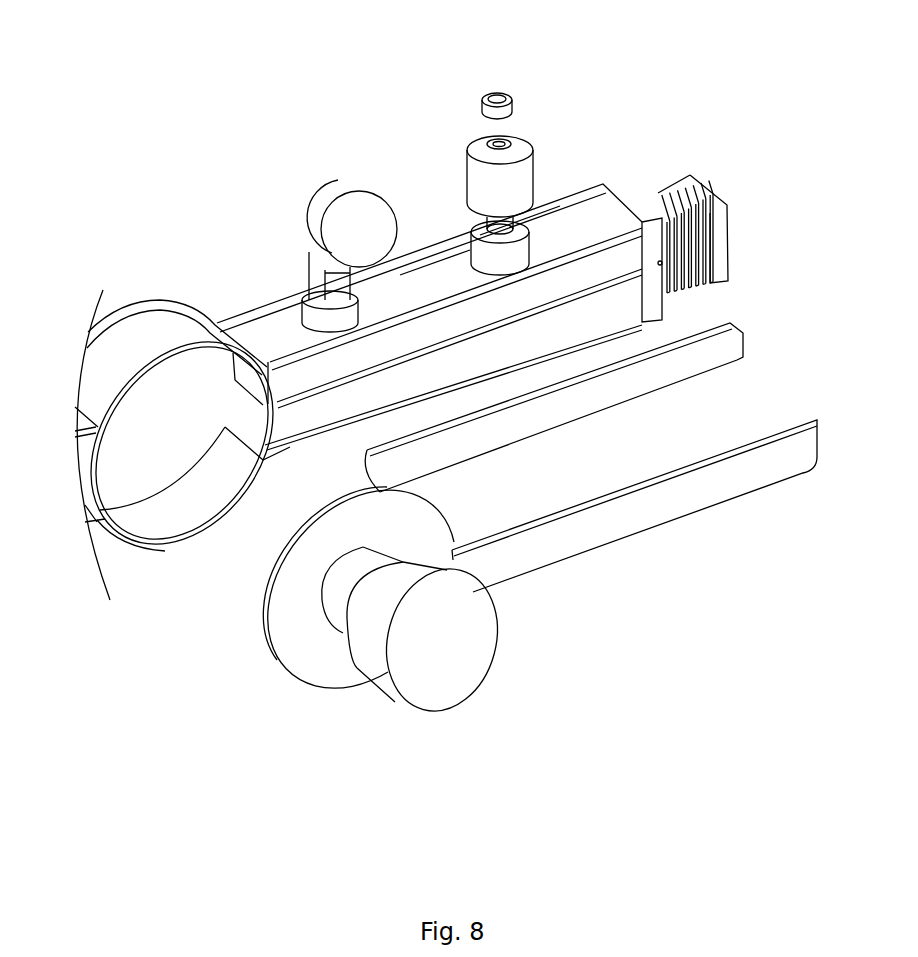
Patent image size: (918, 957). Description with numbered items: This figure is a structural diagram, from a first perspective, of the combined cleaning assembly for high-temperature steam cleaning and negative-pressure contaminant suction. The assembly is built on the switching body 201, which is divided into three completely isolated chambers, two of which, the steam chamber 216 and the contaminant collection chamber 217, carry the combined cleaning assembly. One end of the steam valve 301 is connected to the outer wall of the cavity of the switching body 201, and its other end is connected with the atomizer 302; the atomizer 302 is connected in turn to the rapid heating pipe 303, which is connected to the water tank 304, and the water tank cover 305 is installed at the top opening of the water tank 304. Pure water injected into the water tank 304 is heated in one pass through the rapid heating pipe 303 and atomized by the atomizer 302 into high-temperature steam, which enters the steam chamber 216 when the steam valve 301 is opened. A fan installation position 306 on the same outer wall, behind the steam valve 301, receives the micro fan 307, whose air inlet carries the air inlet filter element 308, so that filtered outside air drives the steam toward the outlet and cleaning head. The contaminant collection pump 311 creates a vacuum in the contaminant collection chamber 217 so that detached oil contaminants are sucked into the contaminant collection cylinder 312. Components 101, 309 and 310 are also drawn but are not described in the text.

The mounting bracket with cooling fins 101 is at (625, 200).
The switching body 201 is at (148, 332).
The steam chamber 216 is at (267, 370).
The contaminant collection chamber 217 is at (170, 517).
The steam valve 301 is at (543, 192).
The atomizer 302 is at (458, 205).
The rapid heating pipe 303 is at (470, 220).
The water tank 304 is at (517, 137).
The water tank cover 305 is at (497, 92).
The fan installation position 306 is at (298, 373).
The micro fan 307 is at (302, 287).
The air inlet filter element 308 is at (347, 240).
The support bar 309 is at (703, 343).
The guide plate 310 is at (567, 540).
The contaminant collection pump 311 is at (332, 610).
The contaminant collection cylinder 312 is at (473, 653).